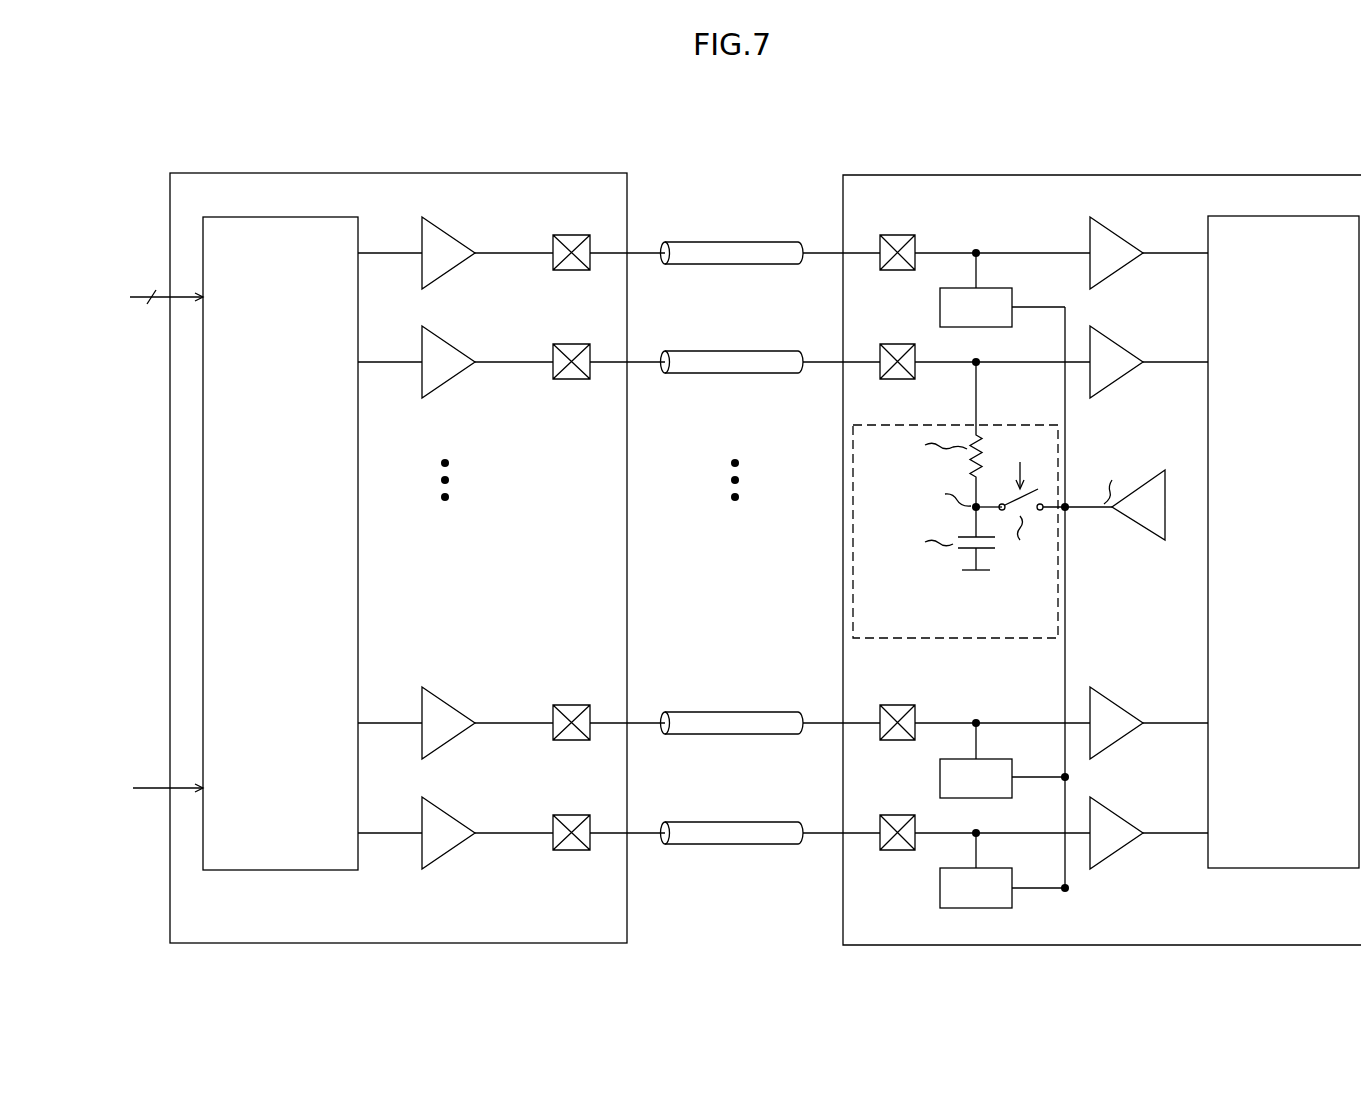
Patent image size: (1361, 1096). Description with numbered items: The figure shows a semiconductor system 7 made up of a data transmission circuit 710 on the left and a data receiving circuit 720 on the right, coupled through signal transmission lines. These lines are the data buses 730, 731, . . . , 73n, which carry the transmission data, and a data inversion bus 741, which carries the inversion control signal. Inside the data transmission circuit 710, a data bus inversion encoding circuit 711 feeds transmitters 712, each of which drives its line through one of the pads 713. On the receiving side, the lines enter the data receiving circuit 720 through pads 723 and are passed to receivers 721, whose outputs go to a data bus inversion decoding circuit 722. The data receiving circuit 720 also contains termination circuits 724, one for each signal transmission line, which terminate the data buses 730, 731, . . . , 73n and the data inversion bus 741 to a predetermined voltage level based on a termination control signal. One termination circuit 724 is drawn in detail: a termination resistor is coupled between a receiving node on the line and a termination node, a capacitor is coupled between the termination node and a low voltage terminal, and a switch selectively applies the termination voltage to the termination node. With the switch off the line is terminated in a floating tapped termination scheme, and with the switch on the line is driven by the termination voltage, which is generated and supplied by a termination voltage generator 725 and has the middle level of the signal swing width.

The semiconductor system 7 is at (137, 139).
The data transmission circuit 710 is at (508, 173).
The data bus inversion encoding circuit 711 is at (322, 217).
The transmitters 712 is at (447, 232).
The pads 713 is at (555, 235).
The data receiving circuit 720 is at (1229, 175).
The receivers 721 is at (1115, 234).
The data bus inversion decoding circuit 722 is at (1326, 216).
The pads 723 is at (881, 235).
The termination circuits 724 is at (988, 288).
The termination voltage generator 725 is at (1169, 482).
The data bus 730 is at (782, 242).
The data bus 731 is at (782, 351).
The data bus 73n is at (782, 712).
The data inversion bus 741 is at (782, 822).